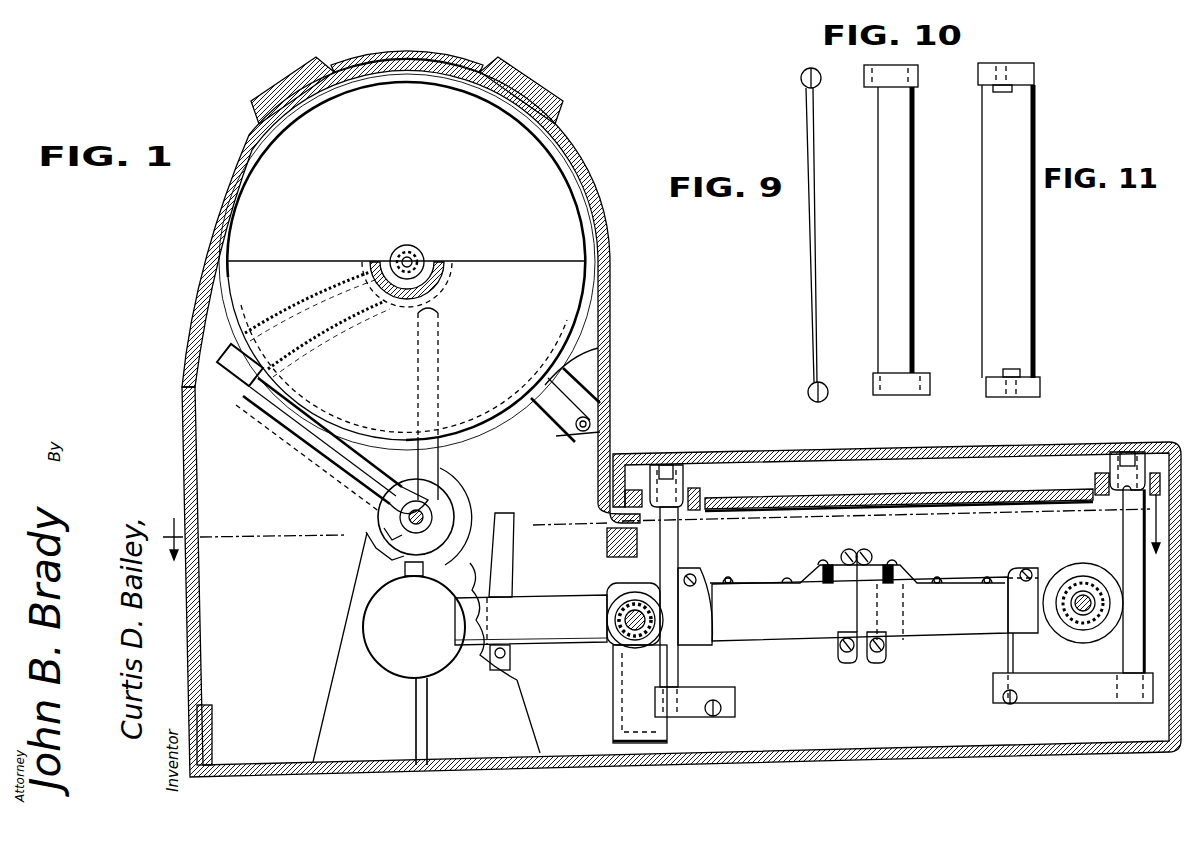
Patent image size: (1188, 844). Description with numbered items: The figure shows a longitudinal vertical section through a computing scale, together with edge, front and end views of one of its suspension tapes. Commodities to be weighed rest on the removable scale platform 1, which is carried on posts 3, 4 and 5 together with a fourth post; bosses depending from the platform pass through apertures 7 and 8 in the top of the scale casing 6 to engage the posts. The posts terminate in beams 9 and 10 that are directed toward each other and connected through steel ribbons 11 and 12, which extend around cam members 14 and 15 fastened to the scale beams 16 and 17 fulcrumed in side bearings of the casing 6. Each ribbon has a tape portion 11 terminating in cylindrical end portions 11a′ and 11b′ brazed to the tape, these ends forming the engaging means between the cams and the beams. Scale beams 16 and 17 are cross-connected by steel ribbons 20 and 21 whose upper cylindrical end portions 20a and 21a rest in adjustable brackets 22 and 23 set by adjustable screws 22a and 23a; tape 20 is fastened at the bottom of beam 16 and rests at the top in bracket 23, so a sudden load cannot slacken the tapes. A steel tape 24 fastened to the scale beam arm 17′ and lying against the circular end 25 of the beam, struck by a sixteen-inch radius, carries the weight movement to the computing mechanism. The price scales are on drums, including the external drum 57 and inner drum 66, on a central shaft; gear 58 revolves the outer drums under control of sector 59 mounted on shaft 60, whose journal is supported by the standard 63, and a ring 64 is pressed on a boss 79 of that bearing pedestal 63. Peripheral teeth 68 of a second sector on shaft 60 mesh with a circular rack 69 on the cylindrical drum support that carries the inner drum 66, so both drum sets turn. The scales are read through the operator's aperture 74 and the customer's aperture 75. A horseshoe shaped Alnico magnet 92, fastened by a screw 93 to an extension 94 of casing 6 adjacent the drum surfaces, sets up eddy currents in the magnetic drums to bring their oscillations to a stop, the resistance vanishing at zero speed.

In FIG. 1, the scale platform 1 is at (950, 450).
In FIG. 1, the post 3 is at (652, 533).
In FIG. 1, the post 4 is at (668, 557).
In FIG. 1, the post 5 is at (1123, 534).
In FIG. 1, the scale casing 6 is at (1170, 607).
In FIG. 1, the aperture 7 is at (703, 484).
In FIG. 1, the aperture 8 is at (1108, 472).
In FIG. 1, the beam 9 is at (705, 718).
In FIG. 1, the beam 10 is at (1098, 695).
In FIG. 1, the steel ribbon 11 is at (716, 667).
In FIG. 9, the steel ribbon 11 is at (815, 262).
In FIG. 10, the steel ribbon 11 is at (914, 232).
In FIG. 11, the steel ribbon 11 is at (1038, 280).
In FIG. 9, the cylindrical end portion 11a′ is at (800, 83).
In FIG. 10, the cylindrical end portion 11a′ is at (895, 86).
In FIG. 11, the cylindrical end portion 11a′ is at (1032, 98).
In FIG. 9, the cylindrical end portion 11b′ is at (808, 393).
In FIG. 10, the cylindrical end portion 11b′ is at (896, 396).
In FIG. 11, the cylindrical end portion 11b′ is at (1040, 386).
In FIG. 1, the steel ribbon 12 is at (1005, 660).
In FIG. 1, the cam member 14 is at (700, 614).
In FIG. 1, the cam member 15 is at (1015, 600).
In FIG. 1, the scale beam 16 is at (805, 632).
In FIG. 1, the scale beam 17 is at (953, 630).
In FIG. 1, the scale beam arm 17′ is at (560, 655).
In FIG. 1, the steel ribbon 20 is at (833, 633).
In FIG. 1, the upper cylindrical end portion 20a is at (847, 549).
In FIG. 1, the steel ribbon 21 is at (887, 633).
In FIG. 1, the upper cylindrical end portion 21a is at (868, 556).
In FIG. 1, the adjustable bracket 22 is at (857, 560).
In FIG. 1, the adjustable screw 22a is at (807, 568).
In FIG. 1, the adjustable bracket 23 is at (394, 668).
In FIG. 1, the adjustable screw 23a is at (912, 563).
In FIG. 1, the steel tape 24 is at (414, 620).
In FIG. 1, the circular end 25 is at (500, 556).
In FIG. 1, the external drum 57 is at (603, 306).
In FIG. 1, the gear 58 is at (417, 250).
In FIG. 1, the sector 59 is at (250, 362).
In FIG. 1, the shaft 60 is at (372, 536).
In FIG. 1, the standard 63 is at (354, 613).
In FIG. 1, the ring 64 is at (452, 492).
In FIG. 1, the inner drum 66 is at (302, 452).
In FIG. 1, the peripheral teeth 68 is at (254, 404).
In FIG. 1, the circular rack 69 is at (432, 289).
In FIG. 1, the operator's aperture 74 is at (510, 90).
In FIG. 1, the customer's aperture 75 is at (311, 94).
In FIG. 1, the boss 79 is at (390, 526).
In FIG. 1, the horseshoe shaped Alnico magnet 92 is at (562, 377).
In FIG. 1, the screw 93 is at (612, 403).
In FIG. 1, the extension 94 is at (622, 447).